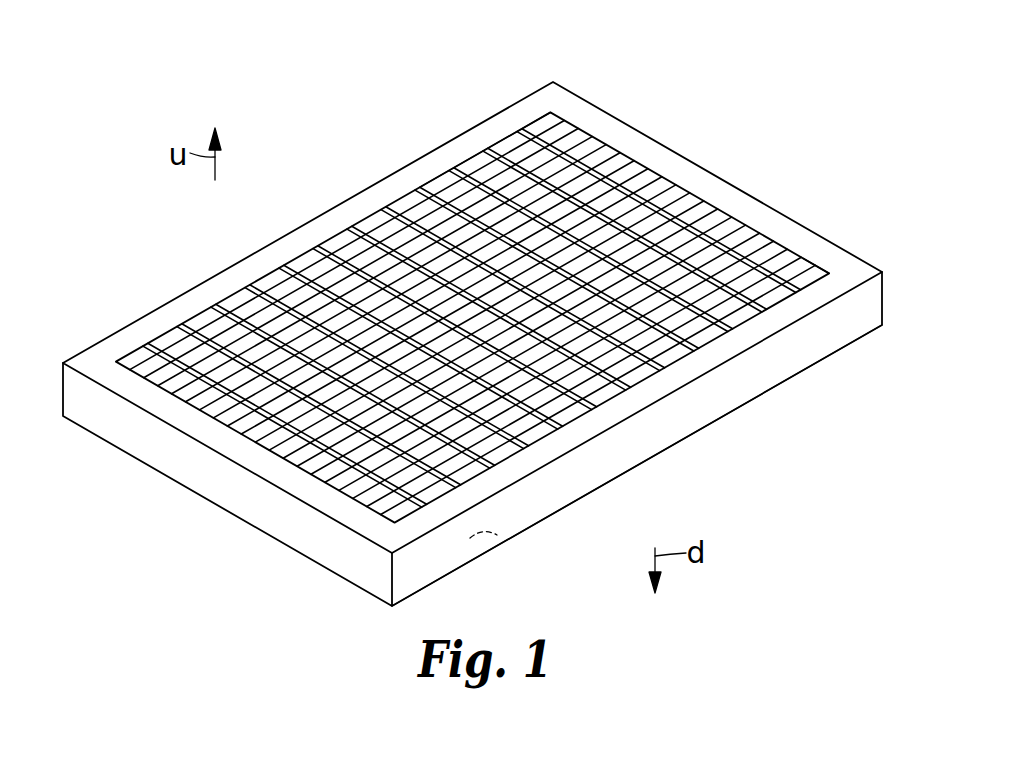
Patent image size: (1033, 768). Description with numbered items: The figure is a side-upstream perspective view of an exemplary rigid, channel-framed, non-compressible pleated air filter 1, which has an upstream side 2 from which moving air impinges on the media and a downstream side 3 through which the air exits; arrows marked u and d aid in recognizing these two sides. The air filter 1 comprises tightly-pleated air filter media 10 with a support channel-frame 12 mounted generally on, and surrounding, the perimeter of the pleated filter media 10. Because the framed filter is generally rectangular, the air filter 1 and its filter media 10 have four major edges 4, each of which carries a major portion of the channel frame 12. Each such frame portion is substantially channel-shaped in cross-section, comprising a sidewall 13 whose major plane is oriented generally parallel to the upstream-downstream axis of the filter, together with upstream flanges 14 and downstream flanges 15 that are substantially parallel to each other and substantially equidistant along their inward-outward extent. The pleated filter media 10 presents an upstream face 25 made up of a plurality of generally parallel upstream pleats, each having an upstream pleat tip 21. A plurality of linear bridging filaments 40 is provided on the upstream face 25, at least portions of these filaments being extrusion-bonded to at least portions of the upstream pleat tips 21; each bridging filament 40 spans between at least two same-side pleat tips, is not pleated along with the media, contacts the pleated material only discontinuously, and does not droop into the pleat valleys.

The air filter 1 is at (792, 68).
The upstream side 2 is at (478, 98).
The downstream side 3 is at (803, 418).
The major edges 4 is at (157, 306).
The pleated air filter media 10 is at (306, 268).
The support channel-frame 12 is at (656, 144).
The sidewall 13 is at (712, 408).
The upstream flanges 14 is at (383, 190).
The downstream flanges 15 is at (499, 542).
The upstream pleat tip 21 is at (228, 318).
The upstream face 25 is at (582, 128).
The linear bridging filaments 40 is at (790, 264).